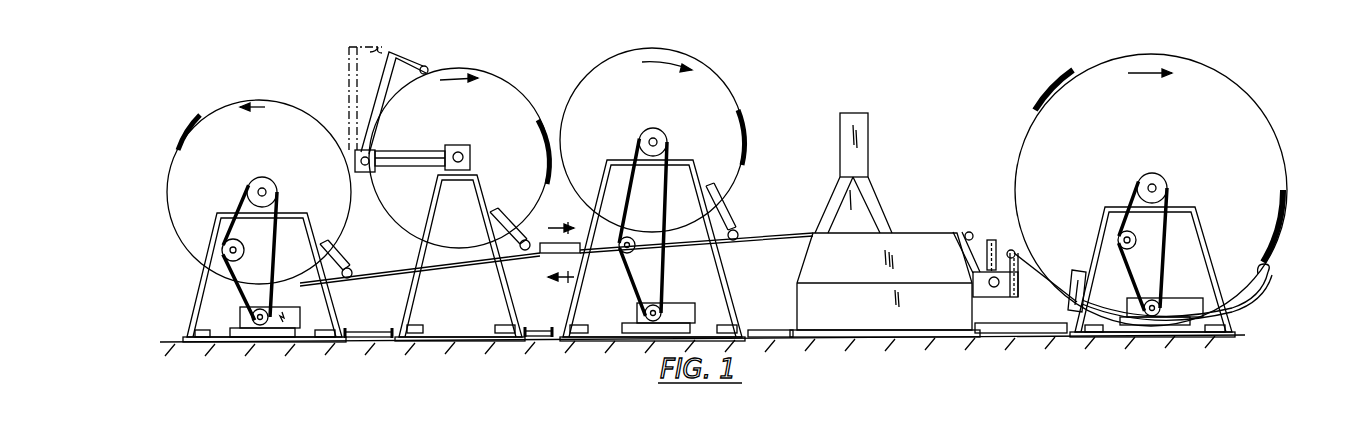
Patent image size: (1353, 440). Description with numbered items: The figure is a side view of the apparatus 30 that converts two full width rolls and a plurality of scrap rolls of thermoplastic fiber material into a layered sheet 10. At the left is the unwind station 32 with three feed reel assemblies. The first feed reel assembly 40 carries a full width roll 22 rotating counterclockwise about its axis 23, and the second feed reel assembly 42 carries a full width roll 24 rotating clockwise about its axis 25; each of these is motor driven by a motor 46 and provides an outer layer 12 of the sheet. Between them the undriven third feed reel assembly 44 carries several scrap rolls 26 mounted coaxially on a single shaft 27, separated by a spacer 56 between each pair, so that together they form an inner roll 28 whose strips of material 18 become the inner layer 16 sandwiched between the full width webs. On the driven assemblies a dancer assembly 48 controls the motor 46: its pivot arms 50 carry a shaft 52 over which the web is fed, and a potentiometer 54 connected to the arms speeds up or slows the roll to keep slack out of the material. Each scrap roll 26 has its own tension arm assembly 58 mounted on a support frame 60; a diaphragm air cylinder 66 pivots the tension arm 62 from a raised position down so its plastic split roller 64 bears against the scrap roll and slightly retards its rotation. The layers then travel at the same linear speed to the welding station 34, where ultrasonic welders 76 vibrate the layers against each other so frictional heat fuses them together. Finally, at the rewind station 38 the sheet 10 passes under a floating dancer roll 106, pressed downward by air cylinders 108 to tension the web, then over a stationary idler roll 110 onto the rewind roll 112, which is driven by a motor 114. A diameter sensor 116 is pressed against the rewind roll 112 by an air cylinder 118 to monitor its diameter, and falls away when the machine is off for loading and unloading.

The layered sheet 10 is at (935, 222).
The outer layer 12 is at (750, 229).
The inner layer 16 is at (540, 256).
The strips of material 18 is at (534, 226).
The full width roll 22 is at (275, 154).
The axis 23 is at (274, 186).
The full width roll 24 is at (670, 109).
The axis 25 is at (661, 142).
The scrap roll 26 is at (475, 124).
The shaft 27 is at (470, 150).
The inner roll 28 is at (505, 82).
The apparatus 30 is at (945, 152).
The unwind station 32 is at (540, 352).
The welding station 34 is at (868, 272).
The rewind station 38 is at (1100, 340).
The first feed reel assembly 40 is at (196, 292).
The second feed reel assembly 42 is at (578, 304).
The third feed reel assembly 44 is at (407, 314).
The motor 46 is at (244, 320).
The dancer assembly 48 is at (338, 249).
The pivot arm 50 is at (347, 266).
The shaft 52 is at (352, 278).
The potentiometer 54 is at (347, 216).
The spacer 56 is at (455, 68).
The tension arm assembly 58 is at (376, 65).
The support frame 60 is at (385, 170).
The tension arm 62 is at (385, 90).
The plastic split roller 64 is at (422, 62).
The diaphragm air cylinder 66 is at (358, 183).
The ultrasonic welder 76 is at (855, 136).
The floating dancer roll 106 is at (982, 290).
The air cylinder 108 is at (1000, 224).
The stationary idler roll 110 is at (1038, 287).
The rewind roll 112 is at (1256, 110).
The motor 114 is at (1172, 300).
The diameter sensor 116 is at (1250, 305).
The air cylinder 118 is at (1078, 270).